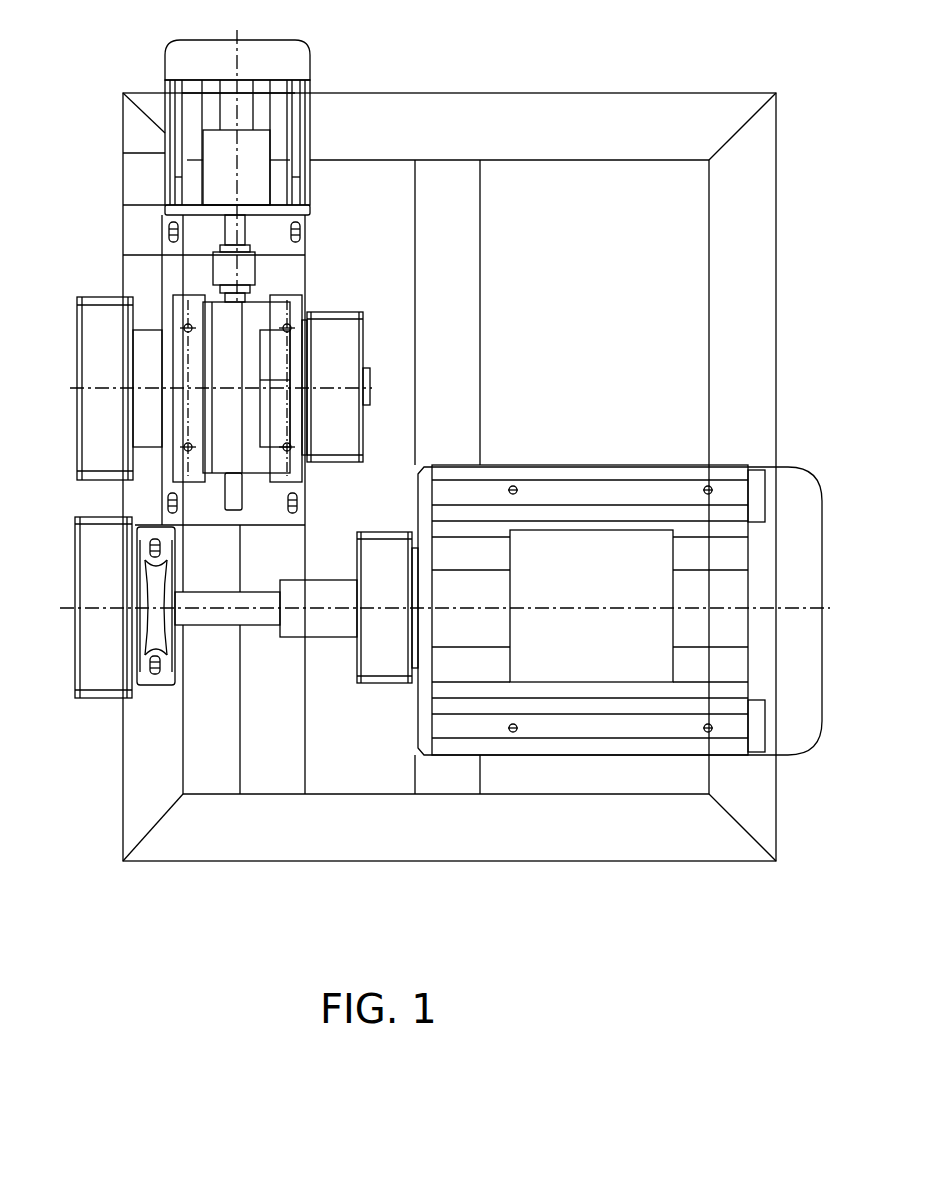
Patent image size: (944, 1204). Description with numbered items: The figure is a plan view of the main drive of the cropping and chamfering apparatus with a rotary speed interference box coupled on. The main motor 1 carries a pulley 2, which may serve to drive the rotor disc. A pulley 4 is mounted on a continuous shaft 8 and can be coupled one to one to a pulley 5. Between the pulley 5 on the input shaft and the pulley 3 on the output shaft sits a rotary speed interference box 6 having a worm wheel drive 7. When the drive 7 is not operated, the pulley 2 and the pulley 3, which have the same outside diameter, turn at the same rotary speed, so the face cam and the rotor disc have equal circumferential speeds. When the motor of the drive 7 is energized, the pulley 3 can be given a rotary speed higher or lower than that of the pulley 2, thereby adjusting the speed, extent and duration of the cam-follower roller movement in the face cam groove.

The main motor 1 is at (789, 481).
The pulley 2 is at (376, 665).
The pulley 3 is at (334, 327).
The pulley 4 is at (88, 645).
The pulley 5 is at (90, 340).
The rotary speed interference box 6 is at (212, 340).
The worm wheel drive 7 is at (265, 56).
The continuous shaft 8 is at (206, 615).